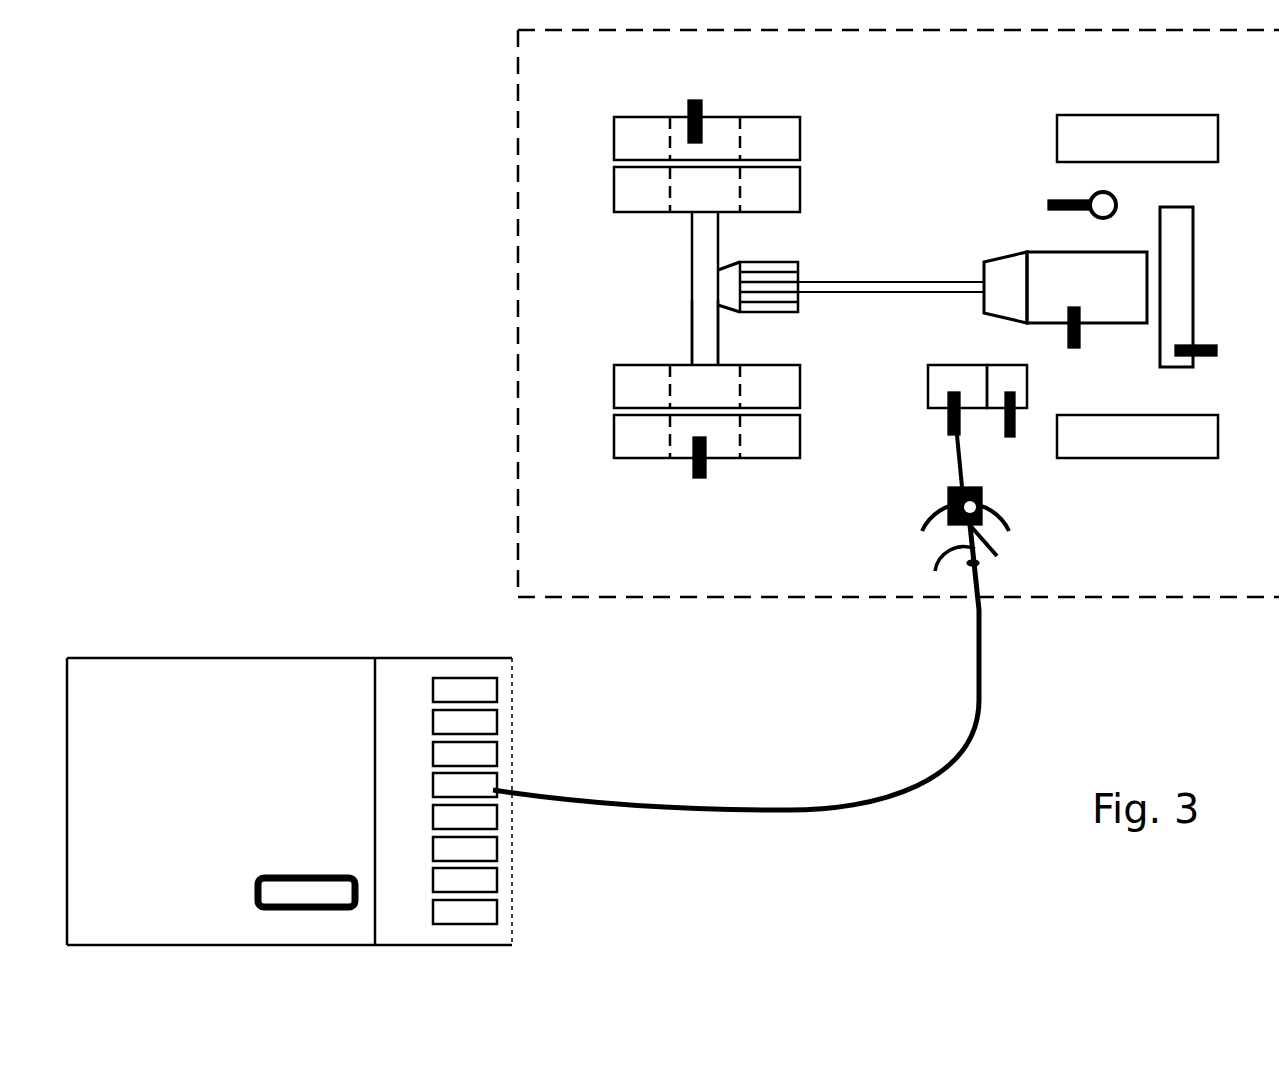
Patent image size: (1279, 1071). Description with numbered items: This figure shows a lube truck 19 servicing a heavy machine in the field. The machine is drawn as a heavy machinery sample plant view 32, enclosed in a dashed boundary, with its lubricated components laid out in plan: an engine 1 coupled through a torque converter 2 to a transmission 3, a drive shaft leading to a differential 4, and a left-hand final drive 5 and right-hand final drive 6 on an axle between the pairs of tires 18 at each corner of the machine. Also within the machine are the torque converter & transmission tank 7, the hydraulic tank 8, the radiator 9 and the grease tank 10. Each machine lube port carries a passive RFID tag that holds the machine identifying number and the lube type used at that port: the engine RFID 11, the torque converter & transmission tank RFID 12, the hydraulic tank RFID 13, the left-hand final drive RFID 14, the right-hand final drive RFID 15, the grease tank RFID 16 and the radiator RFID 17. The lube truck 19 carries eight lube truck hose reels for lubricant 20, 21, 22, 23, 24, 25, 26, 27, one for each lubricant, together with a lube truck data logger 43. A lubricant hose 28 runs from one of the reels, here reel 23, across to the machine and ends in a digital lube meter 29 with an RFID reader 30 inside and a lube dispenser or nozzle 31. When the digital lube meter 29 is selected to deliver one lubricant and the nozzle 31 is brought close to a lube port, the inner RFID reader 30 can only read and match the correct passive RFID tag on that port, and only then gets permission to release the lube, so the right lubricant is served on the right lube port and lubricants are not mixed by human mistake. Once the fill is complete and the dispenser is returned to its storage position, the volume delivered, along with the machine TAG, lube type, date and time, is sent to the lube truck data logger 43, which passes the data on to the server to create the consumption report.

The engine 1 is at (1087, 247).
The torque converter 2 is at (1007, 253).
The transmission 3 is at (768, 315).
The differential 4 is at (734, 262).
The left-hand final drive 5 is at (687, 213).
The right-hand final drive 6 is at (685, 363).
The torque converter & transmission tank 7 is at (1017, 362).
The hydraulic tank 8 is at (957, 362).
The radiator 9 is at (1200, 257).
The grease tank 10 is at (1110, 185).
The engine RFID 11 is at (1070, 350).
The torque converter & transmission tank RFID 12 is at (1008, 440).
The hydraulic tank RFID 13 is at (953, 438).
The left-hand final drive RFID 14 is at (700, 480).
The right-hand final drive RFID 15 is at (691, 96).
The grease tank RFID 16 is at (1047, 203).
The radiator RFID 17 is at (1220, 347).
The tire 18 is at (617, 135).
The lube truck 19 is at (227, 665).
The lube truck hose reel for lubricant 20 is at (495, 695).
The lube truck hose reel for lubricant 21 is at (495, 727).
The lube truck hose reel for lubricant 22 is at (495, 759).
The lube truck hose reel for lubricant 23 is at (495, 790).
The lube truck hose reel for lubricant 24 is at (495, 822).
The lube truck hose reel for lubricant 25 is at (495, 854).
The lube truck hose reel for lubricant 26 is at (495, 885).
The lube truck hose reel for lubricant 27 is at (495, 917).
The lubricant hose 28 is at (927, 782).
The digital lube meter 29 is at (943, 513).
The RFID readers inside the digital lube meter 30 is at (1006, 533).
The lube dispenser (nozzle) 31 is at (941, 568).
The heavy machinery sample plant view 32 is at (518, 222).
The lube truck data logger 43 is at (260, 890).